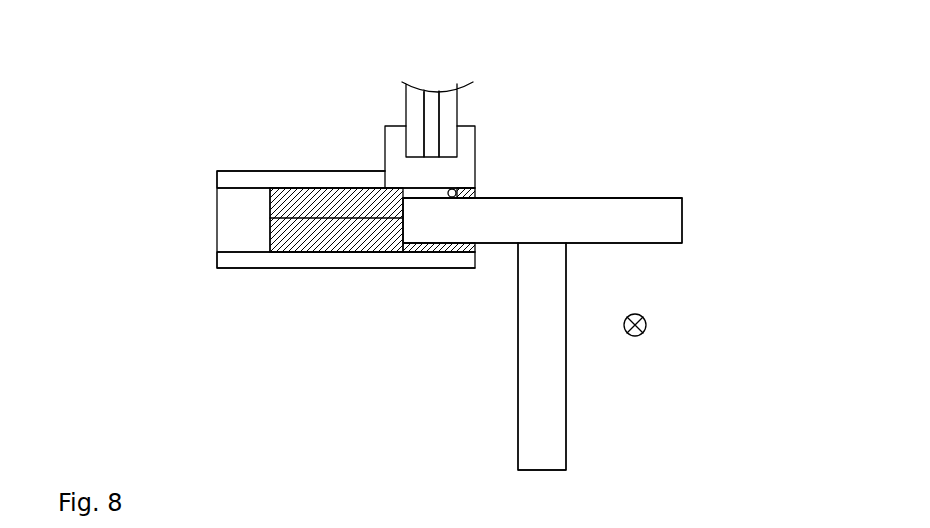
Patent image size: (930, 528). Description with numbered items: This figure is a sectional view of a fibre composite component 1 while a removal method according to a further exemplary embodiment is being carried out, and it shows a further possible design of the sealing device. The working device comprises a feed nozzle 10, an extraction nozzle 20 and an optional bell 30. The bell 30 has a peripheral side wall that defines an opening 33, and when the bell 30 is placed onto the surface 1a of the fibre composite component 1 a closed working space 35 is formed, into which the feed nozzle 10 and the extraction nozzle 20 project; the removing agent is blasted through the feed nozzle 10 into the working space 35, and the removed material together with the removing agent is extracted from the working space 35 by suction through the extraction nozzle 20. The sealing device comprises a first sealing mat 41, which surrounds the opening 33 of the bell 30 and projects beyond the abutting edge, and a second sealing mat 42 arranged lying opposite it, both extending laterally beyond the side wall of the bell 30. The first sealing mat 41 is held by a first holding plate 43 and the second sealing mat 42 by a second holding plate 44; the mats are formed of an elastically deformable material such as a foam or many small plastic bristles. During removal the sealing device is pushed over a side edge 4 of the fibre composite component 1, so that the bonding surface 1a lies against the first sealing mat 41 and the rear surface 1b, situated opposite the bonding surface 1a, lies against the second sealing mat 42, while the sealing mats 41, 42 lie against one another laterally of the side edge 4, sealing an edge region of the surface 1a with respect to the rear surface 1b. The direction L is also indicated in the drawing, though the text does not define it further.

The fibre composite component 1 is at (683, 225).
The surface 1a is at (653, 199).
The rear surface 1b is at (502, 245).
The side edge 4 is at (377, 249).
The feed nozzle 10 is at (434, 105).
The extraction nozzle 20 is at (413, 110).
The bell 30 is at (477, 130).
The opening 33 is at (445, 199).
The working space 35 is at (463, 157).
The first sealing mat 41 is at (288, 195).
The second sealing mat 42 is at (280, 247).
The first holding plate 43 is at (218, 173).
The second holding plate 44 is at (225, 263).
The longitudinal axis direction L is at (646, 322).